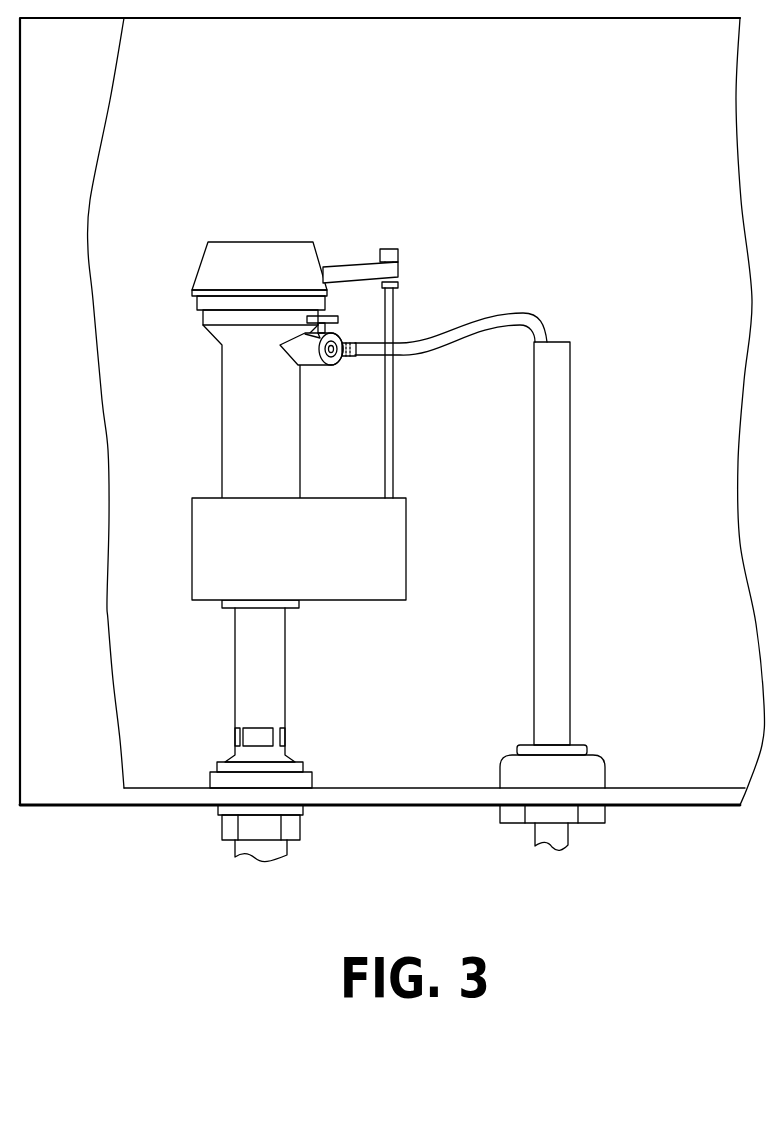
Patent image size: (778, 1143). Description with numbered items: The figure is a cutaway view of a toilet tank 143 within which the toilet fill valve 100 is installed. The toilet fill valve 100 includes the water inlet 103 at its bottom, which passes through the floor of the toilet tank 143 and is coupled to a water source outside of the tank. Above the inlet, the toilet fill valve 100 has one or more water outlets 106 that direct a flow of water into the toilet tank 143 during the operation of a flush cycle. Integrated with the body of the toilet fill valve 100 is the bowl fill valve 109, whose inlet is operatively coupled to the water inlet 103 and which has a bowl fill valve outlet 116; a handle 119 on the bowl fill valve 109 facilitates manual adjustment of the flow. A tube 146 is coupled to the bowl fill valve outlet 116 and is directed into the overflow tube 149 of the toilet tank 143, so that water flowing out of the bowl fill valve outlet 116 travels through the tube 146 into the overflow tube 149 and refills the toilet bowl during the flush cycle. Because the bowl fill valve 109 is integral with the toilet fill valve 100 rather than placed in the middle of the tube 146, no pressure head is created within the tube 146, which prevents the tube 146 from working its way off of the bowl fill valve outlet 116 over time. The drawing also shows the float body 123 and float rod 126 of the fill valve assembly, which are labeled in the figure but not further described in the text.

The toilet fill valve 100 is at (203, 160).
The water inlet 103 is at (262, 858).
The water outlet 106 is at (263, 735).
The bowl fill valve 109 is at (307, 367).
The bowl fill valve outlet 116 is at (352, 360).
The handle 119 is at (327, 315).
The float body 123 is at (407, 553).
The float rod 126 is at (387, 425).
The toilet tank 143 is at (82, 806).
The tube 146 is at (455, 333).
The overflow tube 149 is at (572, 425).